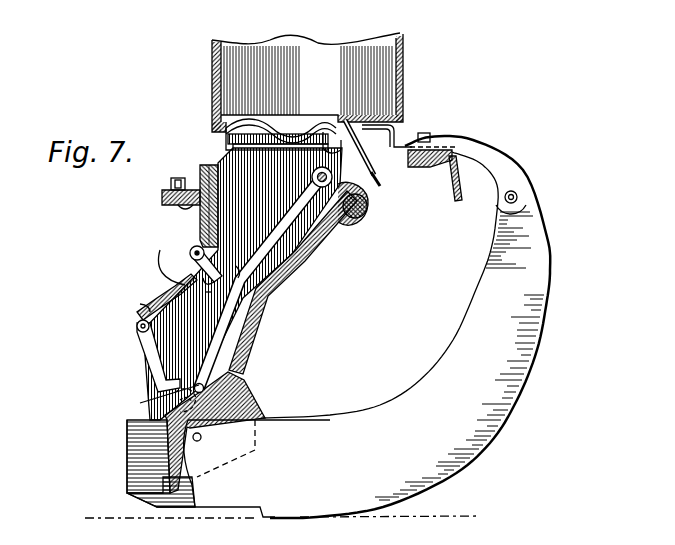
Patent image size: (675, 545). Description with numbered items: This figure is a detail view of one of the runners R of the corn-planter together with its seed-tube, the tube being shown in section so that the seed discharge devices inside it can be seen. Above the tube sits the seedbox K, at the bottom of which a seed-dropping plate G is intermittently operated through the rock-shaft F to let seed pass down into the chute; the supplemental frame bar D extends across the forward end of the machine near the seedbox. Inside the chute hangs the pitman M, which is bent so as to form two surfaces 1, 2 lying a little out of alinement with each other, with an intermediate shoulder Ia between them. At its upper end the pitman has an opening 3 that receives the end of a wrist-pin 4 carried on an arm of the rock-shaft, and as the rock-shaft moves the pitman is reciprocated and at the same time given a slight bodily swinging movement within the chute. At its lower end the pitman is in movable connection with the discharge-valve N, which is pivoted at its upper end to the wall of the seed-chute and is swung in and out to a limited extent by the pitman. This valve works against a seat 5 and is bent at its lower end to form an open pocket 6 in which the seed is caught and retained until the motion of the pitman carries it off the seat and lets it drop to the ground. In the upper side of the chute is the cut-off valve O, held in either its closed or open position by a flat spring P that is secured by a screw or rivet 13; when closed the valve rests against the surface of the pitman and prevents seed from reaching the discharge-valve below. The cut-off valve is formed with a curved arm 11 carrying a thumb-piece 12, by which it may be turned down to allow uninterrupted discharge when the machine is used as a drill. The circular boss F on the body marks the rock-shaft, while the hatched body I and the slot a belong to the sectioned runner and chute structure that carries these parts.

The seedbox K is at (321, 82).
The seed-dropping plate G is at (304, 131).
The body casting I is at (242, 284).
The intermediate shoulder Ia is at (240, 267).
The pitman M is at (283, 224).
The supplemental frame bar D is at (312, 190).
The rock-shaft F is at (368, 212).
The runner R is at (406, 327).
The discharge-valve N is at (157, 362).
The cut-off valve O is at (195, 265).
The spring P is at (178, 293).
The slot a is at (236, 275).
The pitman surface 1 is at (297, 243).
The pitman surface 2 is at (233, 346).
The opening 3 is at (334, 177).
The wrist-pin 4 is at (313, 177).
The seat 5 is at (172, 428).
The open pocket 6 is at (170, 398).
The curved arm 11 is at (209, 302).
The thumb-piece 12 is at (167, 257).
The screw or rivet 13 is at (146, 306).